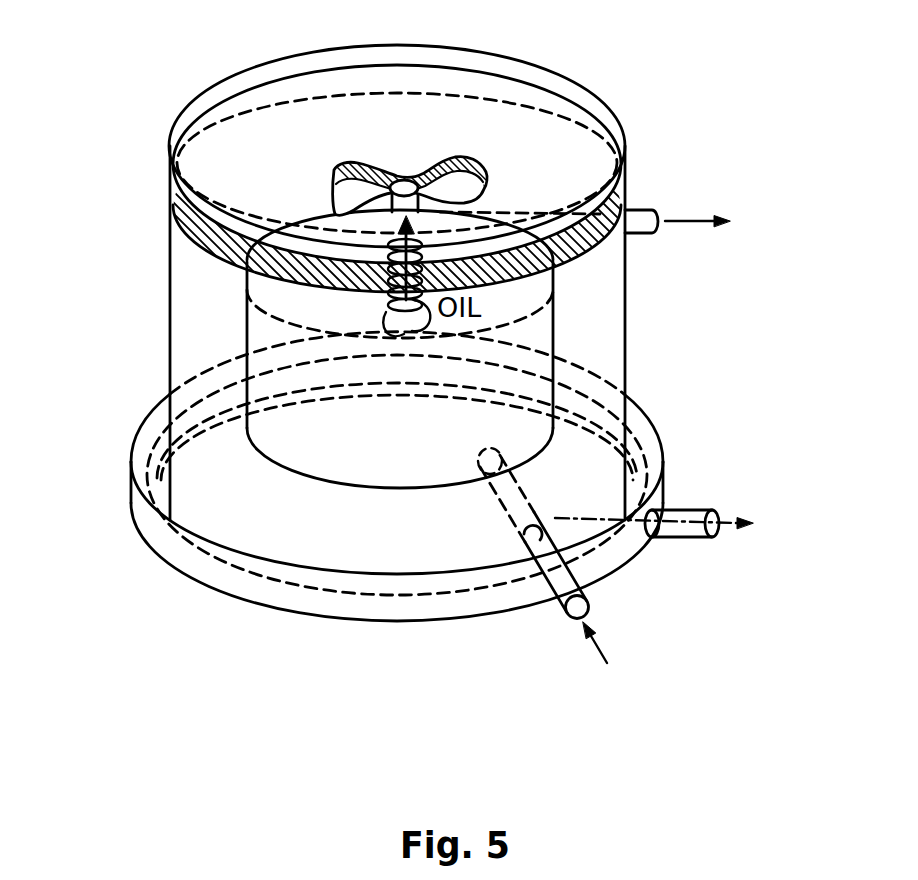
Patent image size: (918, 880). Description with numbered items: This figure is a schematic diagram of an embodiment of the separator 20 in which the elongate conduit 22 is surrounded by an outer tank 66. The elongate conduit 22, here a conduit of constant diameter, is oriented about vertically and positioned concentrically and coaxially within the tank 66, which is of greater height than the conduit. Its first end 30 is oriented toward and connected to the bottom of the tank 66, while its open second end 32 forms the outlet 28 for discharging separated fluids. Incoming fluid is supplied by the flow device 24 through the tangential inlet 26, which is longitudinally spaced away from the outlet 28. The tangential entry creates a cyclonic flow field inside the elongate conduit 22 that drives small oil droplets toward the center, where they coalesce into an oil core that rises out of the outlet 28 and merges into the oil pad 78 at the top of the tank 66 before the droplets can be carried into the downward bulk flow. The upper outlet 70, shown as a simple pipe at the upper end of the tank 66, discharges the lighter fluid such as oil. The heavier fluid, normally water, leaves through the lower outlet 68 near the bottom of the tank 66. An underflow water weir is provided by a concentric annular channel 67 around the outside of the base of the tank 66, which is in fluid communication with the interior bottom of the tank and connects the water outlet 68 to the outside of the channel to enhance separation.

The separator 20 is at (90, 238).
The elongate conduit 22 is at (257, 370).
The flow device 24 is at (562, 606).
The tangential inlet 26 is at (628, 391).
The outlet 28 is at (283, 244).
The first end 30 is at (570, 401).
The open second end 32 is at (567, 274).
The outer tank 66 is at (168, 360).
The annular channel 67 is at (133, 447).
The lower outlet 68 is at (677, 509).
The upper outlet 70 is at (642, 210).
The oil pad 78 is at (369, 168).